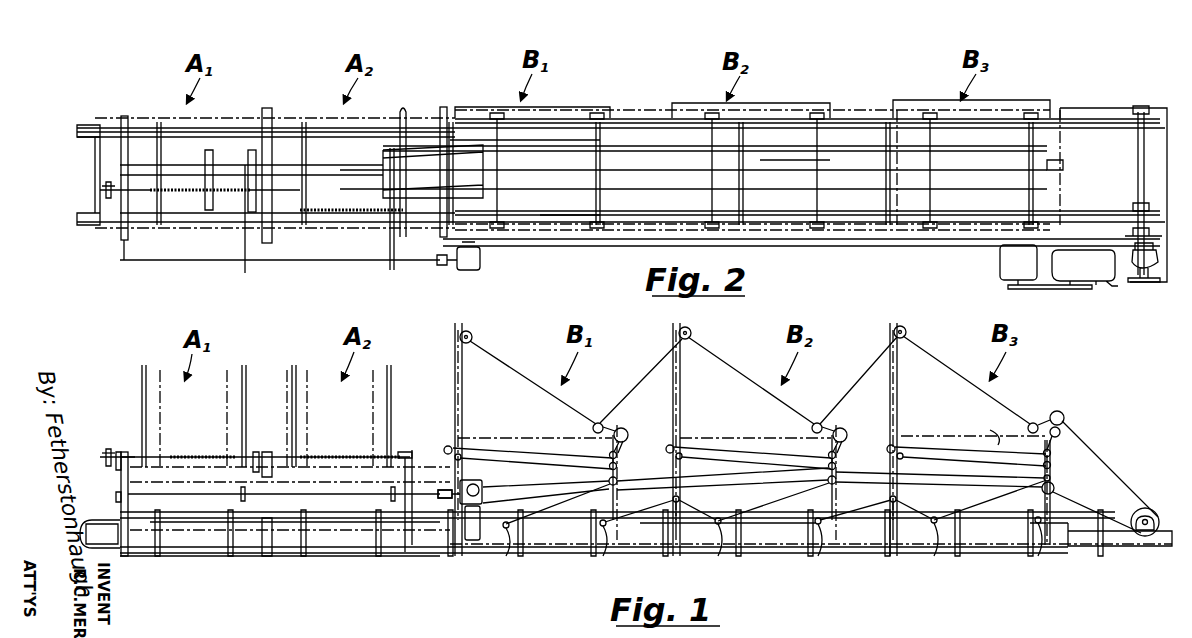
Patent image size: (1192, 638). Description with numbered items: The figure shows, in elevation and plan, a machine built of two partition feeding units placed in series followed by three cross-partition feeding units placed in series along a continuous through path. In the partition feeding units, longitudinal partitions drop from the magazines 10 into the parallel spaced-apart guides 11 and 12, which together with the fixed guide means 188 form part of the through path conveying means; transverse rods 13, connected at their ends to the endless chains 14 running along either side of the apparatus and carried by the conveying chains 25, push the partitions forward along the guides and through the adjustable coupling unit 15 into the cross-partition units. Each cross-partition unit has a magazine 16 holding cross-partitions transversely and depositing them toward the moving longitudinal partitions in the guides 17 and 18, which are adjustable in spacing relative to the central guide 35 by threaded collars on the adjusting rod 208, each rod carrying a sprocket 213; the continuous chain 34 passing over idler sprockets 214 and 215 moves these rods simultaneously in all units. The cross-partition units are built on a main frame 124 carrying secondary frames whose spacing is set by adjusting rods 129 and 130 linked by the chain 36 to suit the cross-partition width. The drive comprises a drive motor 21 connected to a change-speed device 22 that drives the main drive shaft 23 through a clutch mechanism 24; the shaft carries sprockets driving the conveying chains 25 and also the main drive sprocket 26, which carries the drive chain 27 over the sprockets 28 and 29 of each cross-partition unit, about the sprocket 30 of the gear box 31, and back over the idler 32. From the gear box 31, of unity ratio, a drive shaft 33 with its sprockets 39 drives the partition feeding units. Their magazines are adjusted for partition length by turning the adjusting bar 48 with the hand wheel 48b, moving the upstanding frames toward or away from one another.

In FIG. 1, the magazine 10 is at (246, 395).
In FIG. 2, the guide 11 is at (350, 160).
In FIG. 2, the guide 12 is at (348, 213).
In FIG. 2, the transverse rod 13 is at (158, 124).
In FIG. 2, the endless chain 14 is at (243, 128).
In FIG. 1, the endless chain 14 is at (346, 553).
In FIG. 2, the adjustable coupling unit 15 is at (428, 146).
In FIG. 1, the magazine 16 is at (521, 437).
In FIG. 2, the guide 17 is at (556, 145).
In FIG. 2, the guide 18 is at (570, 197).
In FIG. 2, the drive motor 21 is at (1003, 262).
In FIG. 2, the change-speed device 22 is at (1090, 273).
In FIG. 2, the main drive shaft 23 is at (1140, 154).
In FIG. 2, the clutch mechanism 24 is at (1155, 273).
In FIG. 2, the conveying chain 25 is at (1137, 110).
In FIG. 2, the main drive sprocket 26 is at (1136, 230).
In FIG. 1, the main drive sprocket 26 is at (1136, 514).
In FIG. 1, the drive chain 27 is at (1106, 464).
In FIG. 1, the sprocket 28 is at (598, 423).
In FIG. 1, the sprocket 29 is at (470, 336).
In FIG. 1, the sprocket 30 is at (481, 491).
In FIG. 2, the gear box 31 is at (462, 266).
In FIG. 1, the gear box 31 is at (477, 542).
In FIG. 1, the idler 32 is at (1054, 488).
In FIG. 2, the drive shaft 33 is at (213, 262).
In FIG. 1, the drive shaft 33 is at (328, 522).
In FIG. 1, the continuous chain 34 is at (773, 525).
In FIG. 2, the central guide 35 is at (788, 164).
In FIG. 1, the chain 36 is at (991, 429).
In FIG. 1, the sprocket 39 is at (243, 497).
In FIG. 1, the adjusting bar 48 is at (130, 456).
In FIG. 2, the hand wheel 48b is at (102, 190).
In FIG. 1, the hand wheel 48b is at (106, 462).
In FIG. 1, the main frame 124 is at (452, 373).
In FIG. 1, the adjusting rod 129 is at (446, 446).
In FIG. 1, the adjusting rod 130 is at (627, 432).
In FIG. 2, the guide means 188 is at (215, 170).
In FIG. 2, the adjusting rod 208 is at (1040, 140).
In FIG. 1, the sprocket 213 is at (507, 529).
In FIG. 1, the idler sprocket 214 is at (676, 504).
In FIG. 1, the idler sprocket 215 is at (609, 482).